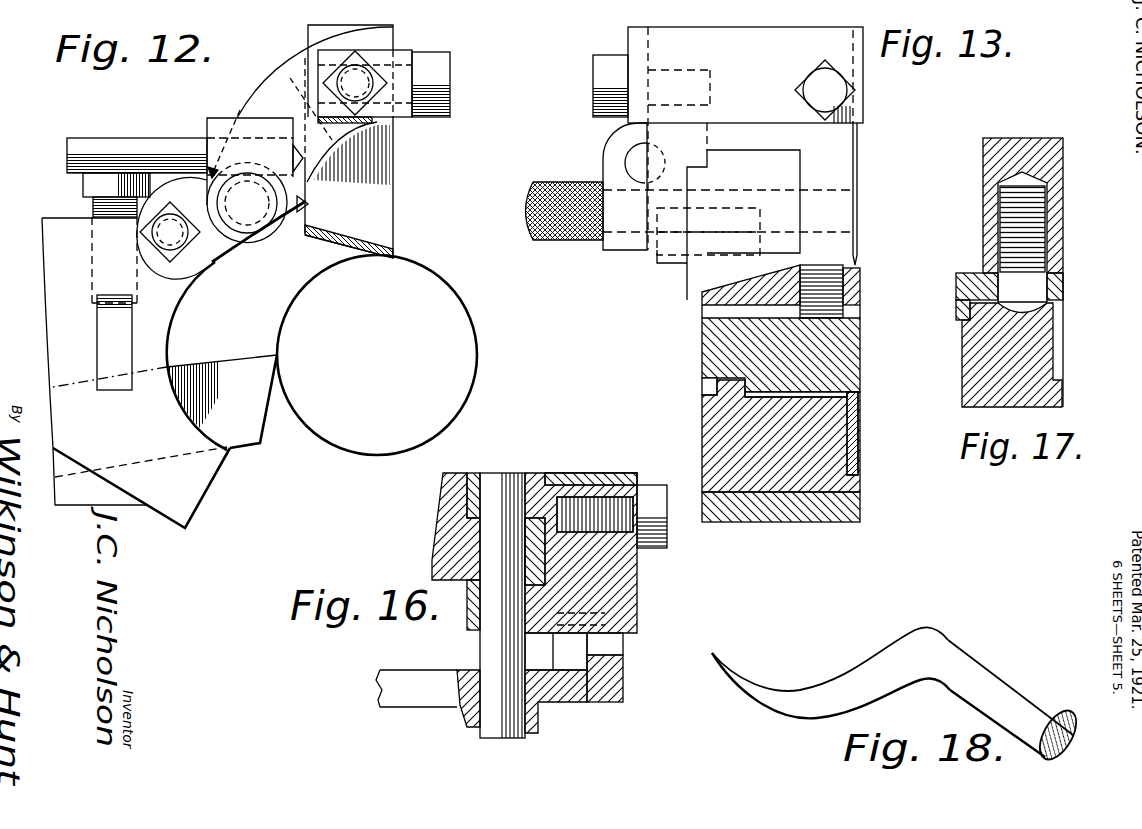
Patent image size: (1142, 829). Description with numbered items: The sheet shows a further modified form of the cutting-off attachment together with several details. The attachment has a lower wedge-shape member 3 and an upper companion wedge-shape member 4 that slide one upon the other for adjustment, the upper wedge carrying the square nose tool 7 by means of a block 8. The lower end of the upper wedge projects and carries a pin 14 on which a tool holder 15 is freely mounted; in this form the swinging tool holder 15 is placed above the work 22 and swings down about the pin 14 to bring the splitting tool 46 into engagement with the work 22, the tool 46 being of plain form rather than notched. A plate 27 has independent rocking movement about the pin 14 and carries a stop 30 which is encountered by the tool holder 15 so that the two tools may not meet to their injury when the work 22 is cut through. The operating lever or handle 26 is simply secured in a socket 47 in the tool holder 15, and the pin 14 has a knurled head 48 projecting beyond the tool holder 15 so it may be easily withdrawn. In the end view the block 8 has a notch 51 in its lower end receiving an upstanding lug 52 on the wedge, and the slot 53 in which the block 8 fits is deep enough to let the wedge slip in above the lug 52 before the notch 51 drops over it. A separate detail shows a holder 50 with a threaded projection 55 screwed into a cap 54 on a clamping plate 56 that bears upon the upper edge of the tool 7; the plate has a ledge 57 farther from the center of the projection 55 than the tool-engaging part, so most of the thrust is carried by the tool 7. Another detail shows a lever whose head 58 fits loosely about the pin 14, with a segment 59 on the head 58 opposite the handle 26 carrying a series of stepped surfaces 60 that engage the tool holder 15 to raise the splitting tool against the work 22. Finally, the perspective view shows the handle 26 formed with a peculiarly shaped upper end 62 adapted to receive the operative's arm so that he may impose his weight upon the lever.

In FIG. 12, the lower wedge-shape member 3 is at (80, 493).
In FIG. 12, the upper companion wedge-shape member 4 is at (55, 278).
In FIG. 12, the square nose tool 7 is at (222, 372).
In FIG. 13, the square nose tool 7 is at (860, 438).
In FIG. 17, the square nose tool 7 is at (1063, 350).
In FIG. 12, the block 8 is at (110, 344).
In FIG. 13, the block 8 is at (858, 342).
In FIG. 12, the pin 14 is at (272, 243).
In FIG. 16, the pin 14 is at (505, 740).
In FIG. 12, the tool holder 15 is at (290, 78).
In FIG. 13, the tool holder 15 is at (610, 170).
In FIG. 12, the work 22 is at (478, 360).
In FIG. 12, the operating lever or handle 26 is at (125, 145).
In FIG. 16, the operating lever or handle 26 is at (395, 702).
In FIG. 18, the operating lever or handle 26 is at (1015, 690).
In FIG. 12, the plate 27 is at (214, 264).
In FIG. 12, the stop 30 is at (309, 204).
In FIG. 12, the tool 46 is at (382, 180).
In FIG. 13, the socket 47 is at (632, 152).
In FIG. 13, the knurled head 48 is at (565, 229).
In FIG. 17, the holder 50 is at (975, 363).
In FIG. 13, the notch 51 is at (705, 380).
In FIG. 13, the upstanding lug 52 is at (705, 402).
In FIG. 13, the slot 53 is at (715, 312).
In FIG. 17, the cap 54 is at (996, 170).
In FIG. 17, the threaded projection 55 is at (1000, 232).
In FIG. 17, the clamping plate 56 is at (956, 288).
In FIG. 17, the ledge 57 is at (956, 318).
In FIG. 16, the head 58 is at (538, 722).
In FIG. 16, the segment 59 is at (613, 692).
In FIG. 16, the stepped surfaces 60 is at (603, 641).
In FIG. 18, the upper end 62 is at (820, 693).